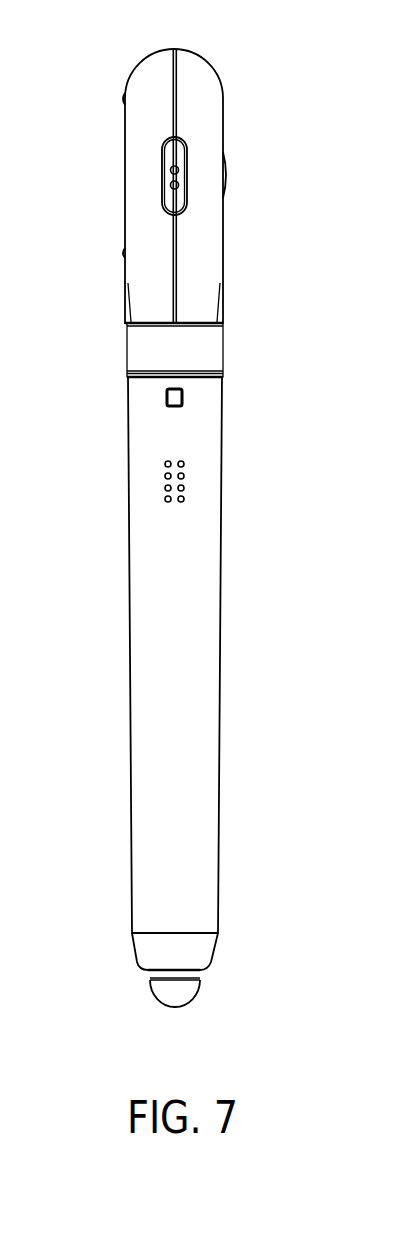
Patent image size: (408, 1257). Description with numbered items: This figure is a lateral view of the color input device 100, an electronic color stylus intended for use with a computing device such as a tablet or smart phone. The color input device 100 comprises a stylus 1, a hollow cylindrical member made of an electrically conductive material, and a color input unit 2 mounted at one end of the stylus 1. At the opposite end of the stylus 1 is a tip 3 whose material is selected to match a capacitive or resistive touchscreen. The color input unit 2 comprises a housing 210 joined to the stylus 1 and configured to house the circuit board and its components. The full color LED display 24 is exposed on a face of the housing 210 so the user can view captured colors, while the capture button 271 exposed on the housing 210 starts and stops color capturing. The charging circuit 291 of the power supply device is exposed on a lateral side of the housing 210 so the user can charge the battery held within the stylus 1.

The stylus 1 is at (221, 457).
The color input unit 2 is at (185, 48).
The tip 3 is at (184, 995).
The full color LED display 24 is at (224, 177).
The color input device 100 is at (220, 661).
The housing 210 is at (197, 100).
The capture button 271 is at (124, 100).
The charging circuit 291 is at (182, 188).